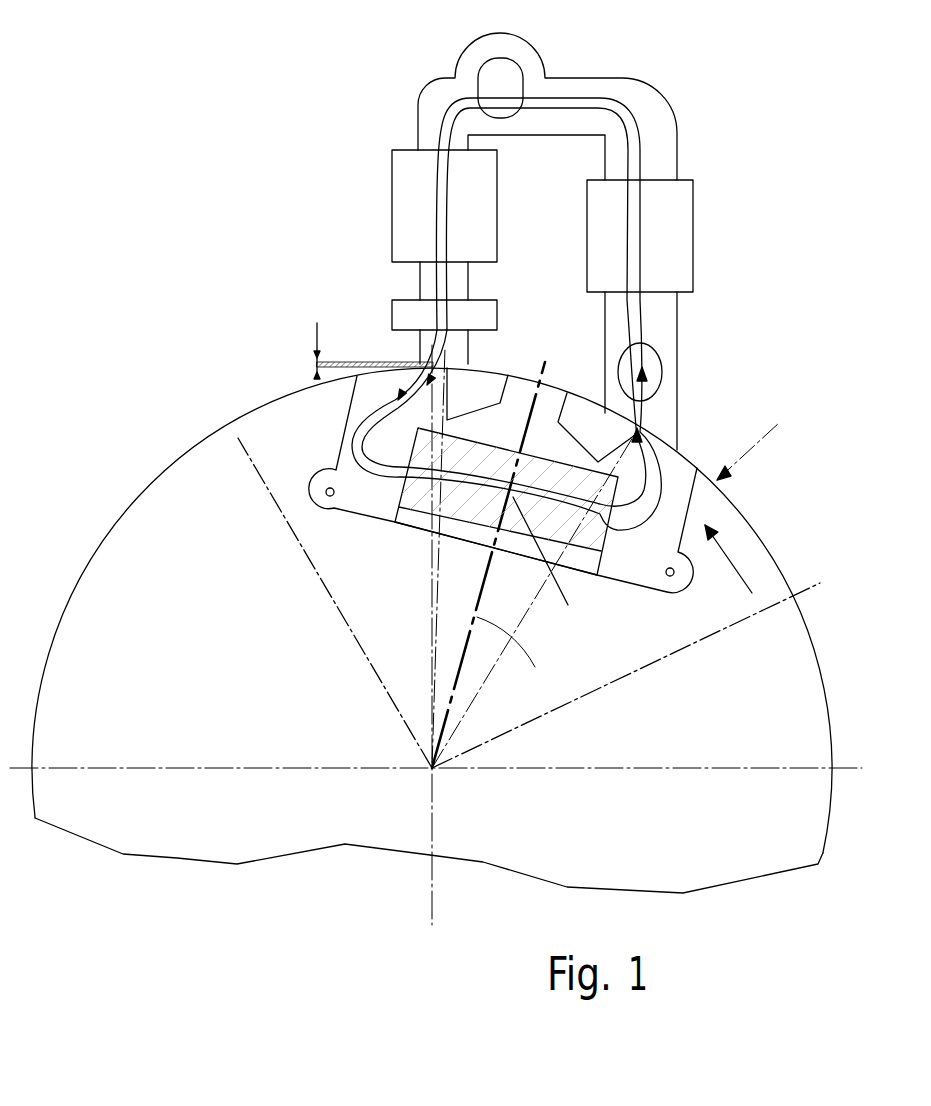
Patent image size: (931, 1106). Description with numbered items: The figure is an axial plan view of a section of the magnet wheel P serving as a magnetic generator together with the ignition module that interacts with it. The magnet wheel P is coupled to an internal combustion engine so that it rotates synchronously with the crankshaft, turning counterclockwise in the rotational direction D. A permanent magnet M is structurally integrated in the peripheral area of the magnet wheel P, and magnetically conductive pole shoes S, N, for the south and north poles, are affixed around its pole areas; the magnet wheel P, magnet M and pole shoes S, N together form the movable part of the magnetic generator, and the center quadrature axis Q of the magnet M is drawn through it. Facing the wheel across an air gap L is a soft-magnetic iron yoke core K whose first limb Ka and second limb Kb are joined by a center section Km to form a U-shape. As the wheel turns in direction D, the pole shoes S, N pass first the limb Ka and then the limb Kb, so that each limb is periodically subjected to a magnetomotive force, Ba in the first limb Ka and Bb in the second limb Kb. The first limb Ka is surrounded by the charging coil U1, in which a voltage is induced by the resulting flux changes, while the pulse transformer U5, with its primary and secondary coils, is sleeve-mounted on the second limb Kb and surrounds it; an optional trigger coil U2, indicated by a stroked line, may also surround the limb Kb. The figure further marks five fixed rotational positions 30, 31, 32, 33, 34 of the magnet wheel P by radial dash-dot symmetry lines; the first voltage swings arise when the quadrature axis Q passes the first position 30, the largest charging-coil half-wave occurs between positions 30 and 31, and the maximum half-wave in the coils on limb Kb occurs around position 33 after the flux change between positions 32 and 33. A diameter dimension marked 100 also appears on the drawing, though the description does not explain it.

The first rotational position 30 is at (434, 630).
The second rotational position 31 is at (639, 434).
The third rotational position 32 is at (498, 563).
The fourth rotational position 33 is at (450, 556).
The fifth rotational position 34 is at (311, 586).
The yoke core K is at (455, 92).
The center section Km is at (573, 90).
The first limb Ka is at (662, 322).
The second limb Kb is at (453, 282).
The magnetomotive force in first limb Ba is at (635, 270).
The magnetomotive force in second limb Bb is at (443, 226).
The charging coil U1 is at (664, 218).
The trigger coil U2 is at (420, 317).
The pulse transformer U5 is at (421, 179).
The pole shoe (South Pole) S is at (477, 394).
The pole shoe (North Pole) N is at (498, 518).
The magnet wheel P is at (392, 560).
The permanent magnet M is at (548, 564).
The center quadrature axis Q is at (534, 600).
The rotational direction D is at (735, 565).
The air gap L is at (362, 351).
The diameter 100 is at (749, 441).